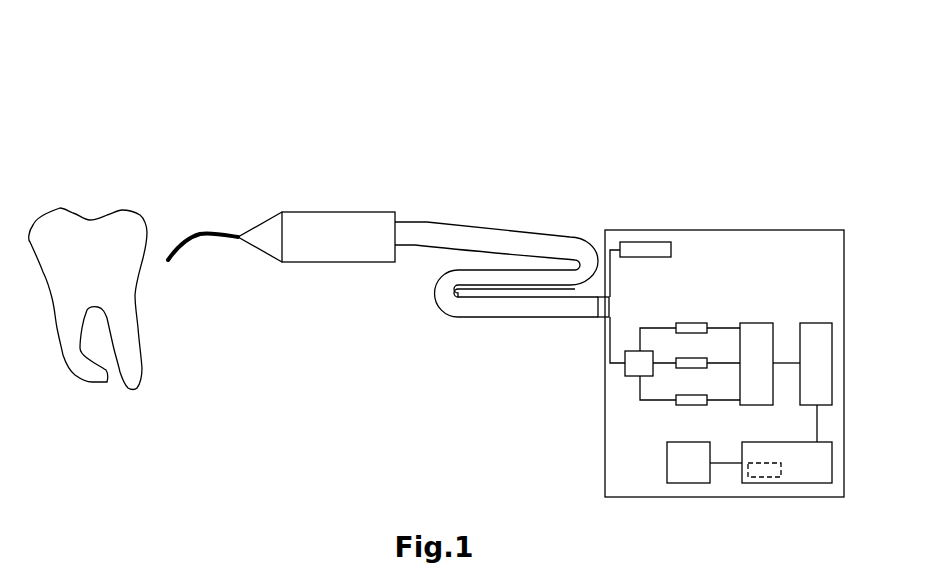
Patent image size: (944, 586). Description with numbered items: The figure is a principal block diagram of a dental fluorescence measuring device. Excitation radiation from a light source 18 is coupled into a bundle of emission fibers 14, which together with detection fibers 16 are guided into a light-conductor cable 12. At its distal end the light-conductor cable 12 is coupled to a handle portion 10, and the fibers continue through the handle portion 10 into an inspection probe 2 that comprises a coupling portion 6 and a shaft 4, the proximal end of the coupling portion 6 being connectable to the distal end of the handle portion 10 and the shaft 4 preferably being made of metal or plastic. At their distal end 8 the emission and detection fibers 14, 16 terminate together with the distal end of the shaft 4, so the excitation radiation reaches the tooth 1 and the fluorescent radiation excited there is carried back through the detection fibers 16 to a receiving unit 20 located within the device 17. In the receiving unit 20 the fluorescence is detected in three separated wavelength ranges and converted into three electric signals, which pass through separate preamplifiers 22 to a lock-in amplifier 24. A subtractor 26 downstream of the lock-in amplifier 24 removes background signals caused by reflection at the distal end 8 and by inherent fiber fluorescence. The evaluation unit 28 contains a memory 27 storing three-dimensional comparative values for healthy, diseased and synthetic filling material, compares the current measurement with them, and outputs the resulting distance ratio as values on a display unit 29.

The tooth 1 is at (75, 257).
The inspection probe 2 is at (227, 140).
The shaft 4 is at (200, 233).
The coupling portion 6 is at (262, 222).
The distal end 8 is at (177, 273).
The handle portion 10 is at (353, 212).
The light-conductor cable 12 is at (485, 307).
The emission fibers 14 is at (610, 278).
The detection fibers 16 is at (610, 335).
The device 17 is at (800, 230).
The light source 18 is at (642, 248).
The receiving unit 20 is at (640, 368).
The preamplifiers 22 is at (695, 327).
The lock-in amplifier 24 is at (752, 333).
The subtractor 26 is at (818, 333).
The memory 27 is at (765, 472).
The evaluation unit 28 is at (813, 463).
The display unit 29 is at (692, 460).